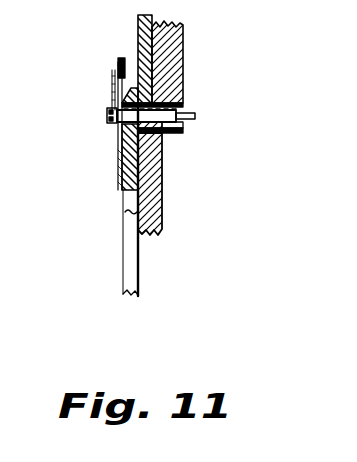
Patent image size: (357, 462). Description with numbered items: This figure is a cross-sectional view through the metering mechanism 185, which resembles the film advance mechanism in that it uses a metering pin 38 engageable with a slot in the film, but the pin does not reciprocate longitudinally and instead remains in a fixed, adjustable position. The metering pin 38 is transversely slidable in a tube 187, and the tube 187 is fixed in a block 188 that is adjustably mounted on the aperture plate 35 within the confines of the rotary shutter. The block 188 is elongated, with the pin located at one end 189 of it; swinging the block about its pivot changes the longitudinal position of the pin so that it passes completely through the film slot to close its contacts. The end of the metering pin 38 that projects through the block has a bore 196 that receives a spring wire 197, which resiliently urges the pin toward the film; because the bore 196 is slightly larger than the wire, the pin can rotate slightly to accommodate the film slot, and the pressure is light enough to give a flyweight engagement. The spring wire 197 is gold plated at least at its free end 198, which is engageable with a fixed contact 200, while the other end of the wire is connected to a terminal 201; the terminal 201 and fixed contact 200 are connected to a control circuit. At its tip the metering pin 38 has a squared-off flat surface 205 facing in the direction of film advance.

The aperture plate 35 is at (157, 202).
The metering pin 38 is at (183, 104).
The metering mechanism 185 is at (92, 181).
The tube 187 is at (184, 133).
The block 188 is at (124, 190).
The end of block 189 is at (141, 76).
The bore 196 is at (105, 118).
The spring wire 197 is at (116, 92).
The free end of spring wire 198 is at (114, 68).
The fixed contact 200 is at (121, 58).
The terminal 201 is at (118, 176).
The flat surface 205 is at (195, 115).